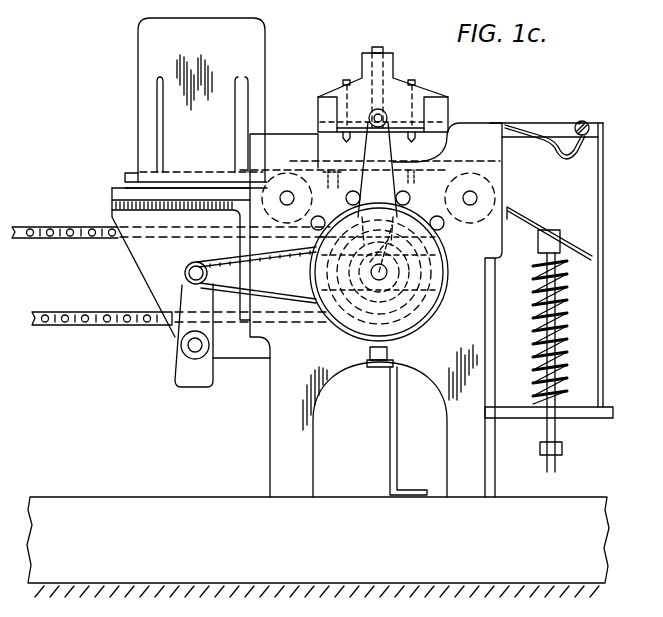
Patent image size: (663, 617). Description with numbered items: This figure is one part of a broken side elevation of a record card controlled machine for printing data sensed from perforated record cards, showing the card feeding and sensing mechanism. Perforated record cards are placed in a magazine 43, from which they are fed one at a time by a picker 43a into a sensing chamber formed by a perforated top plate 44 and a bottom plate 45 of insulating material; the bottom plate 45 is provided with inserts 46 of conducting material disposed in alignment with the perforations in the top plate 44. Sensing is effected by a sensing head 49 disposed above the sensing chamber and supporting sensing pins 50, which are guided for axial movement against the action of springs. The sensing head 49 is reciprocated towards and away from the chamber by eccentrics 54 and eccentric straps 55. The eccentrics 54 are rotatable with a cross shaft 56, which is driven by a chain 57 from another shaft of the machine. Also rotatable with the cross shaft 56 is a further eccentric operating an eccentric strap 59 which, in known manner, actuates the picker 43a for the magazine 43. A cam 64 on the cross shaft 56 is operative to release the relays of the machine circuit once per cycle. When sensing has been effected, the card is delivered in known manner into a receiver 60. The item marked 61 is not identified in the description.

The magazine 43 is at (152, 47).
The picker 43a is at (215, 170).
The perforated top plate 44 is at (310, 170).
The bottom plate 45 is at (445, 175).
The inserts 46 is at (415, 168).
The sensing head 49 is at (428, 112).
The sensing pins 50 is at (413, 80).
The eccentrics 54 is at (396, 223).
The eccentric straps 55 is at (366, 155).
The cross shaft 56 is at (373, 279).
The chain 57 is at (77, 317).
The eccentric strap 59 is at (423, 318).
The receiver 60 is at (580, 193).
The idler roller 61 is at (342, 182).
The cam 64 is at (440, 255).